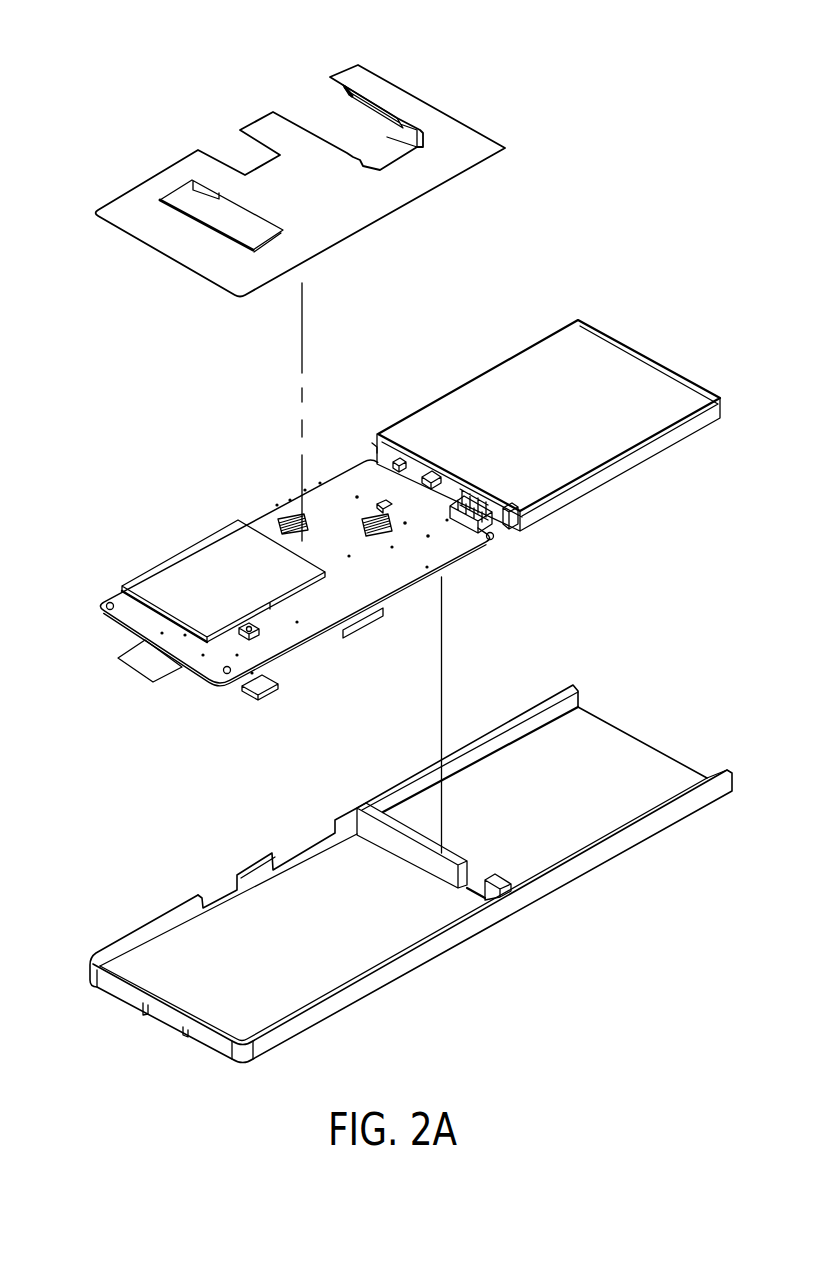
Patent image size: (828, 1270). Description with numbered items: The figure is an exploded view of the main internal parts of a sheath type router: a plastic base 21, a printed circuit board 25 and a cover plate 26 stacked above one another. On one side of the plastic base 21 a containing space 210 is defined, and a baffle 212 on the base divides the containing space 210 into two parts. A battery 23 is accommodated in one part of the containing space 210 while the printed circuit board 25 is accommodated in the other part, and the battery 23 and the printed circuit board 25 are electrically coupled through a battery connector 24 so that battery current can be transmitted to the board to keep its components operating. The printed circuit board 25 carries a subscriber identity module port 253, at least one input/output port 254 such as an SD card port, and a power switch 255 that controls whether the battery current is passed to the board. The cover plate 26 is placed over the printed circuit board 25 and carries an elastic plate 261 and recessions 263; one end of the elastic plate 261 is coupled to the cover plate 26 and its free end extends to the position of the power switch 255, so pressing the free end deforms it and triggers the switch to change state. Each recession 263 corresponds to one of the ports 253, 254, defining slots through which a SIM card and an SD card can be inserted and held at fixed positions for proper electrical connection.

The plastic base 21 is at (411, 874).
The containing space 210 is at (619, 761).
The baffle 212 is at (407, 850).
The battery 23 is at (650, 377).
The battery connector 24 is at (493, 523).
The printed circuit board 25 is at (310, 576).
The subscriber identity module (SIM) port 253 is at (278, 520).
The input/output (I/O) port 254 is at (371, 517).
The power switch 255 is at (243, 633).
The cover plate 26 is at (301, 169).
The elastic plate 261 is at (233, 223).
The recession 263 is at (363, 97).